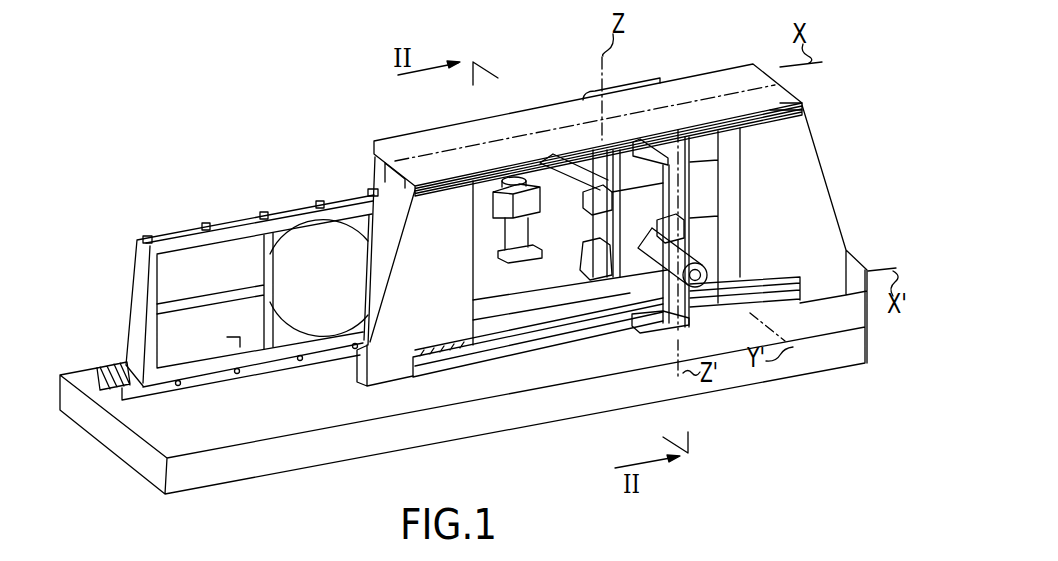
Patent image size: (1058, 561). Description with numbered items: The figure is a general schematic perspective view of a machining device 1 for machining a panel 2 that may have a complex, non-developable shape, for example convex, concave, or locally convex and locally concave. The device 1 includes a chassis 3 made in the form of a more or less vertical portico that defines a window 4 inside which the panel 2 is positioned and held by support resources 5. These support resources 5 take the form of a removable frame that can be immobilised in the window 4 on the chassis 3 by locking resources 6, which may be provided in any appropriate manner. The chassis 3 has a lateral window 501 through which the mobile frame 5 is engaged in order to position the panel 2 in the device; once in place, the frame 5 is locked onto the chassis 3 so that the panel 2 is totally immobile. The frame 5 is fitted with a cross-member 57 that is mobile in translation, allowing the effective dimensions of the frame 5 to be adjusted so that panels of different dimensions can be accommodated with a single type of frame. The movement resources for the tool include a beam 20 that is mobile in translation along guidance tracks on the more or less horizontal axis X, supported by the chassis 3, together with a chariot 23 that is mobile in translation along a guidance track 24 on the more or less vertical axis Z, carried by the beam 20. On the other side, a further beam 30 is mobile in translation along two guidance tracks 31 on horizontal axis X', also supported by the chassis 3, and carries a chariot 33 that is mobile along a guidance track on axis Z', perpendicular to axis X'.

The machining device 1 is at (172, 216).
The panel 2 is at (303, 247).
The chassis 3 is at (813, 227).
The window 4 is at (547, 308).
The support resources 5 is at (135, 323).
The locking resources 6 is at (262, 214).
The beam 20 is at (636, 82).
The chariot 23 is at (598, 148).
The guidance track 24 is at (595, 263).
The beam 30 is at (707, 182).
The guidance tracks 31 is at (802, 110).
The chariot 33 is at (690, 222).
The cross-member 57 is at (262, 262).
The lateral window 501 is at (372, 189).